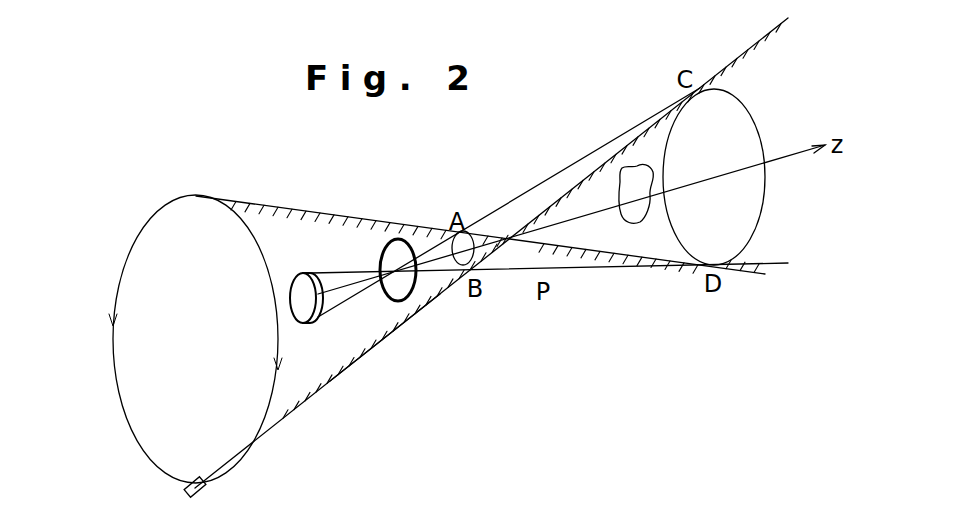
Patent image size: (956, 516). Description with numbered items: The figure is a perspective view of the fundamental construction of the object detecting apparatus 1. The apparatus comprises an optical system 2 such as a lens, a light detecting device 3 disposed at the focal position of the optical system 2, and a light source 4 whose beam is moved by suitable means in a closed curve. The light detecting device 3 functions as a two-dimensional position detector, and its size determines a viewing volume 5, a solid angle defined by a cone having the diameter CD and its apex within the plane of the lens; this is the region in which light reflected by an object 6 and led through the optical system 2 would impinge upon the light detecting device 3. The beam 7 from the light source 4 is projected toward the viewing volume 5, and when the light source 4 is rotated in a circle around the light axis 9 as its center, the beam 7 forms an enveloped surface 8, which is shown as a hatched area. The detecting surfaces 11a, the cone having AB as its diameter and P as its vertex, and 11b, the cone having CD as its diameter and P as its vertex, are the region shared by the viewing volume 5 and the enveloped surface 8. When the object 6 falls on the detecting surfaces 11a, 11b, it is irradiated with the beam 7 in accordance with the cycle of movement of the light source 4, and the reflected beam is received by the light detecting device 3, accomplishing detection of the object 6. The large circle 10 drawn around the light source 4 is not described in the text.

The object detecting apparatus 1 is at (291, 182).
The optical system 2 is at (396, 244).
The light detecting device 3 is at (300, 282).
The light source 4 is at (186, 489).
The viewing volume 5 is at (573, 166).
The object 6 is at (633, 222).
The beam 7 is at (387, 340).
The enveloped surface 8 is at (622, 148).
The light axis 9 is at (768, 160).
The rotating disc 10 is at (132, 247).
The detecting surface 11a is at (485, 233).
The detecting surface 11b is at (547, 207).